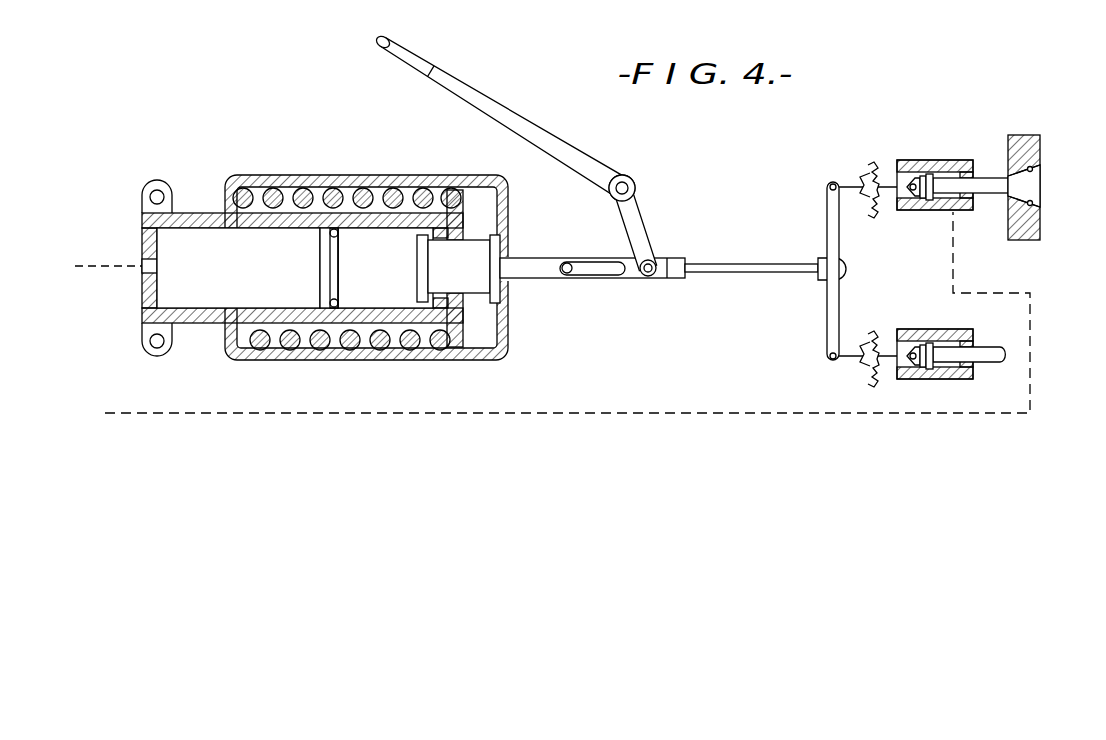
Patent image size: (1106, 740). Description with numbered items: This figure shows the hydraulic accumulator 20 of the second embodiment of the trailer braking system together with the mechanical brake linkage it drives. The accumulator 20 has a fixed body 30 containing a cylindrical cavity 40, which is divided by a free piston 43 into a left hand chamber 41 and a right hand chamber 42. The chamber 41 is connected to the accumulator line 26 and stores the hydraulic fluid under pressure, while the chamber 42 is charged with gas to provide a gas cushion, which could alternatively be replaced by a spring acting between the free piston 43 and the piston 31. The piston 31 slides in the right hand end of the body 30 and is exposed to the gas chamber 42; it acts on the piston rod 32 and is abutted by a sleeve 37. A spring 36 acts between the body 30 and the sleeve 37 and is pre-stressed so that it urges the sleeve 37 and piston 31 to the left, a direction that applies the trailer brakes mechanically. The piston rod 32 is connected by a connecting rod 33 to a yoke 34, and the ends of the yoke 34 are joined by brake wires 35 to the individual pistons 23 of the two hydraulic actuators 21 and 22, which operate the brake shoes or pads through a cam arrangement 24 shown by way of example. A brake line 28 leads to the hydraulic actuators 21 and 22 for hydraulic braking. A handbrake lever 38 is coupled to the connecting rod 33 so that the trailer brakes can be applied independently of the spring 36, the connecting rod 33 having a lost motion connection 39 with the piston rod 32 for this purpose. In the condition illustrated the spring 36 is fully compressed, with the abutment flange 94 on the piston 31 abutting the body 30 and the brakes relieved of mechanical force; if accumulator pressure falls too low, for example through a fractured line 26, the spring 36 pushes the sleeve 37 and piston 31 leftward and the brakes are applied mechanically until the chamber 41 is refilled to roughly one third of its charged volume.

The hydraulic accumulator 20 is at (271, 174).
The hydraulic actuator 21 is at (929, 160).
The hydraulic actuator 22 is at (920, 372).
The piston 23 is at (922, 198).
The cam arrangement 24 is at (1004, 172).
The accumulator line 26 is at (108, 268).
The brake line 28 is at (291, 416).
The fixed body 30 is at (188, 218).
The piston 31 is at (478, 282).
The piston rod 32 is at (545, 274).
The connecting rod 33 is at (750, 273).
The yoke 34 is at (826, 220).
The brake wire 35 is at (852, 186).
The spring 36 is at (351, 189).
The sleeve 37 is at (436, 177).
The handbrake lever 38 is at (522, 115).
The lost motion connection 39 is at (602, 274).
The cylindrical cavity 40 is at (208, 300).
The chamber 41 is at (239, 279).
The chamber 42 is at (367, 279).
The free piston 43 is at (346, 286).
The abutment flange 94 is at (418, 284).